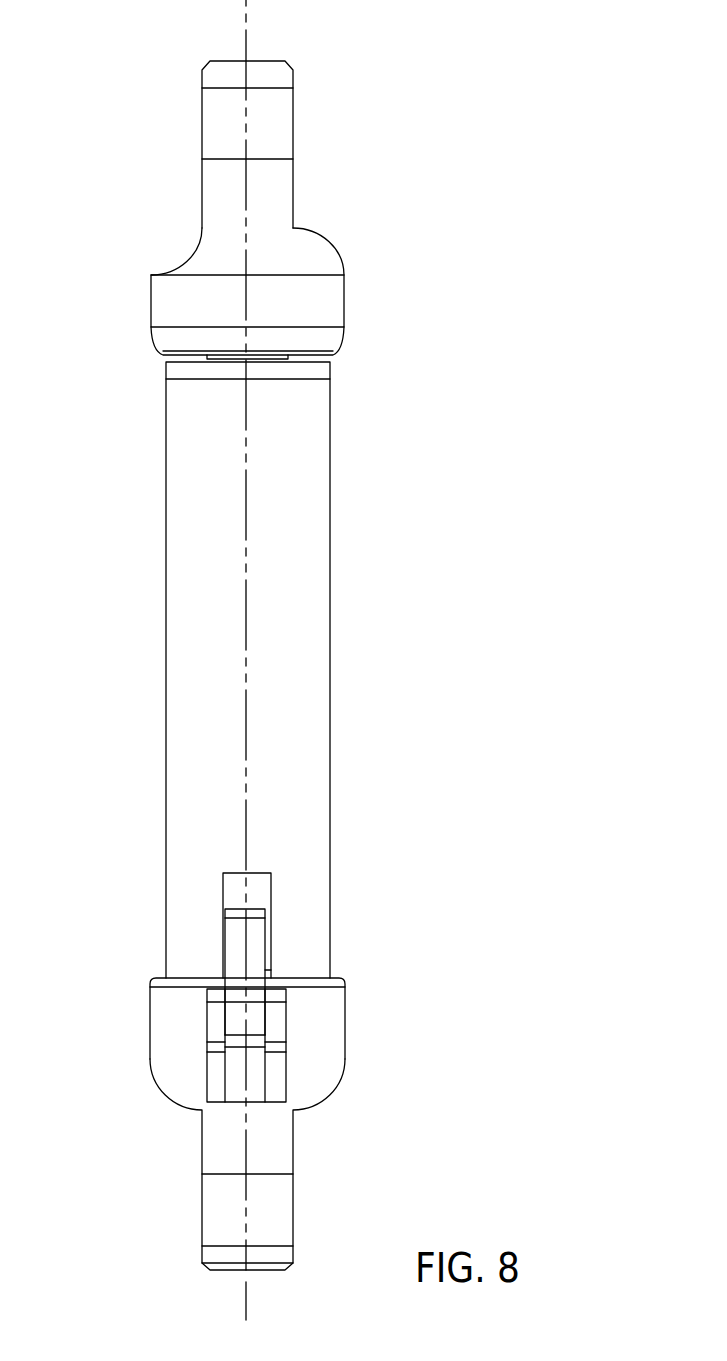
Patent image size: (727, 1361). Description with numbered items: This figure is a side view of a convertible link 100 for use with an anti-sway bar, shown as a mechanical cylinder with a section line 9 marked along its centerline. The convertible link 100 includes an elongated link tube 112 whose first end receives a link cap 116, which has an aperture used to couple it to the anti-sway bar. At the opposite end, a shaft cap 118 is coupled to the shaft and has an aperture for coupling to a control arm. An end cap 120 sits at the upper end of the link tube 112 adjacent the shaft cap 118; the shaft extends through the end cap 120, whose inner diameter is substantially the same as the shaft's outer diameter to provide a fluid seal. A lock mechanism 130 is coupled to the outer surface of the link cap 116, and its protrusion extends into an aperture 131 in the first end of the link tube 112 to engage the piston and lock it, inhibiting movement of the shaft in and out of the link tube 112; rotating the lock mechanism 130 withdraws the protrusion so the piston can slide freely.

The section line 9- 9 is at (230, 21).
The convertible link 100 is at (316, 660).
The link tube 112 is at (288, 562).
The link cap 116 is at (323, 1015).
The shaft cap 118 is at (230, 214).
The end cap 120 is at (207, 367).
The lock mechanism 130 is at (345, 928).
The aperture 131 is at (269, 890).